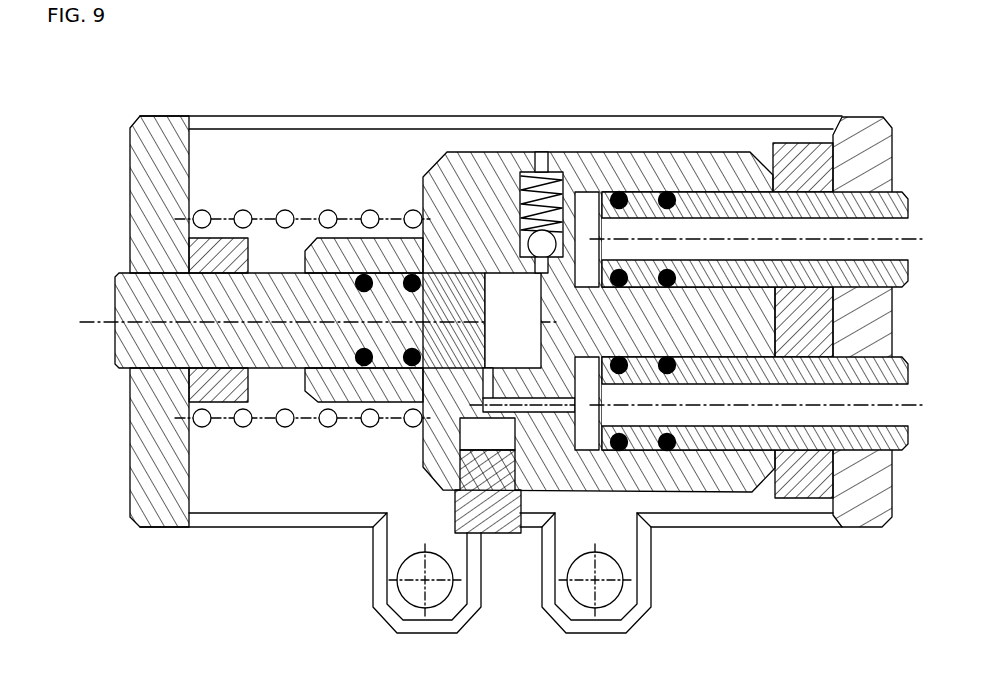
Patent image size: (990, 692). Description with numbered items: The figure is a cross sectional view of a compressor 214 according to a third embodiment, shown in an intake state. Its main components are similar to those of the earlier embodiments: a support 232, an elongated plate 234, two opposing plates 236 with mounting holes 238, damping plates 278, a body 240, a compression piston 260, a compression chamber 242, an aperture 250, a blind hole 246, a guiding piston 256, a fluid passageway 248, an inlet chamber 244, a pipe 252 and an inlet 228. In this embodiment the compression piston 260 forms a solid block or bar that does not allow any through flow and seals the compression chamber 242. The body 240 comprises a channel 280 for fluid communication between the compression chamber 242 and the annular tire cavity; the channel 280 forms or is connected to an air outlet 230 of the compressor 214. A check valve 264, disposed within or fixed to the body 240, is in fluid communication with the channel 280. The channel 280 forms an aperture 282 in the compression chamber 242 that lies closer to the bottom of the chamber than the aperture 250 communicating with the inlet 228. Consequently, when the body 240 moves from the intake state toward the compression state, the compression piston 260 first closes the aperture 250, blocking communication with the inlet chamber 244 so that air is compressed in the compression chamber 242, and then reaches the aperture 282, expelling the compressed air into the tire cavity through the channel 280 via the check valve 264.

The compressor 214 is at (183, 98).
The inlet 228 is at (907, 415).
The air outlet 230 is at (540, 150).
The support 232 is at (325, 117).
The elongated plate 234 is at (250, 150).
The opposing plates 236 is at (158, 500).
The mounting holes 238 is at (415, 587).
The body 240 is at (458, 188).
The compression chamber 242 is at (428, 232).
The inlet chamber 244 is at (590, 440).
The blind hole 246 is at (583, 210).
The fluid passageway 248 is at (537, 407).
The aperture 250 is at (490, 366).
The pipe 252 is at (738, 447).
The guiding piston 256 is at (727, 200).
The compression piston 260 is at (267, 303).
The check valve 264 is at (513, 203).
The damping plates 278 is at (215, 392).
The channel 280 is at (517, 203).
The aperture 282 is at (538, 277).